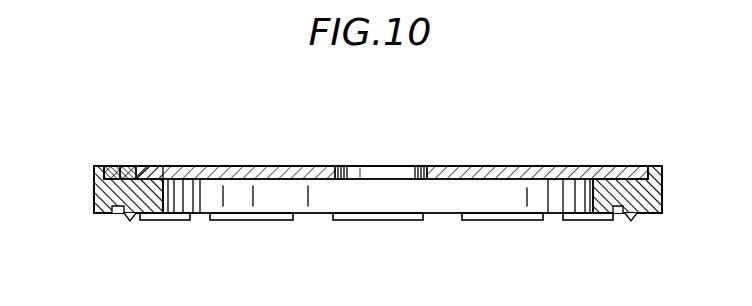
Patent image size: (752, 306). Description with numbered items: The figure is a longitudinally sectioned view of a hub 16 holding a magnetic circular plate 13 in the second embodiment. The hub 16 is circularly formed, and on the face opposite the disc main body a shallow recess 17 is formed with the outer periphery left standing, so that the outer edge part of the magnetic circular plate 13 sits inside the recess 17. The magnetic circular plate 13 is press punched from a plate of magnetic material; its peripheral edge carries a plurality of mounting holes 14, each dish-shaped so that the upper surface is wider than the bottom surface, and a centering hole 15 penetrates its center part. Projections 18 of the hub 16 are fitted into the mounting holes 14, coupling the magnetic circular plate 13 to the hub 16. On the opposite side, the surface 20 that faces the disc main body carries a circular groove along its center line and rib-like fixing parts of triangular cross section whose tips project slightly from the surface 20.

The magnetic circular plate 13 is at (500, 167).
The mounting hole 14 is at (132, 165).
The centering hole 15 is at (342, 168).
The hub 16 is at (95, 172).
The recess 17 is at (115, 165).
The projection 18 is at (143, 165).
The surface 20 is at (158, 221).